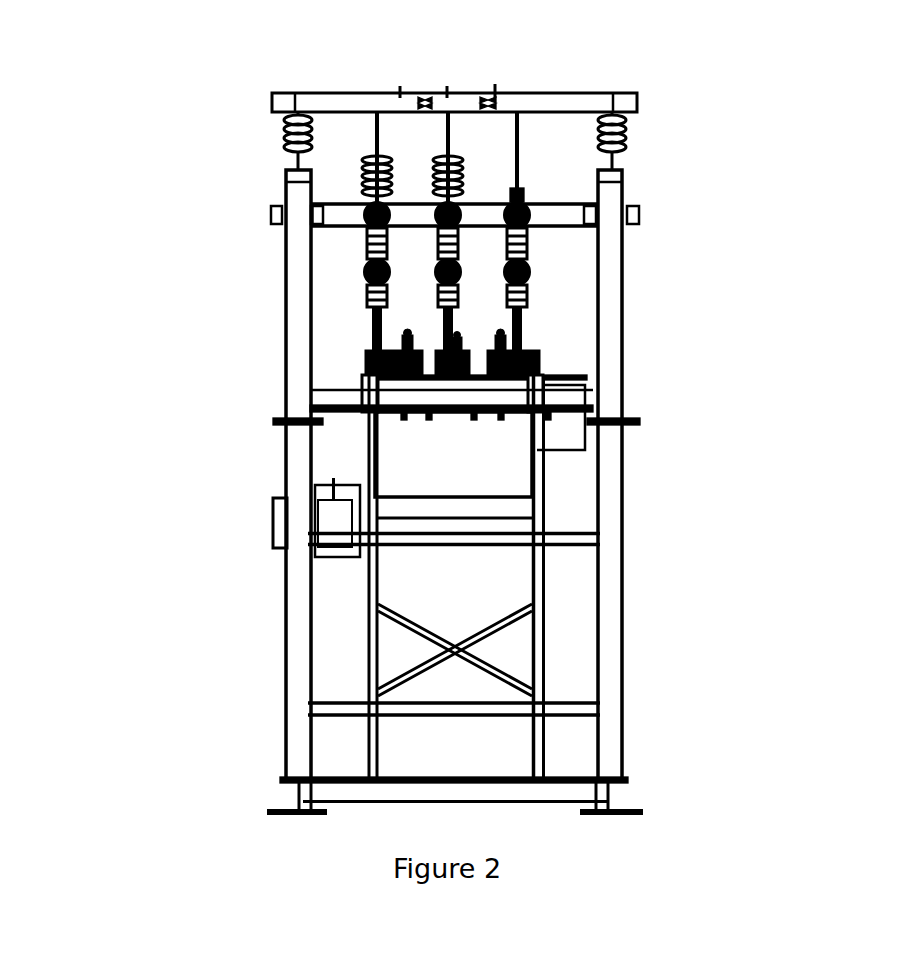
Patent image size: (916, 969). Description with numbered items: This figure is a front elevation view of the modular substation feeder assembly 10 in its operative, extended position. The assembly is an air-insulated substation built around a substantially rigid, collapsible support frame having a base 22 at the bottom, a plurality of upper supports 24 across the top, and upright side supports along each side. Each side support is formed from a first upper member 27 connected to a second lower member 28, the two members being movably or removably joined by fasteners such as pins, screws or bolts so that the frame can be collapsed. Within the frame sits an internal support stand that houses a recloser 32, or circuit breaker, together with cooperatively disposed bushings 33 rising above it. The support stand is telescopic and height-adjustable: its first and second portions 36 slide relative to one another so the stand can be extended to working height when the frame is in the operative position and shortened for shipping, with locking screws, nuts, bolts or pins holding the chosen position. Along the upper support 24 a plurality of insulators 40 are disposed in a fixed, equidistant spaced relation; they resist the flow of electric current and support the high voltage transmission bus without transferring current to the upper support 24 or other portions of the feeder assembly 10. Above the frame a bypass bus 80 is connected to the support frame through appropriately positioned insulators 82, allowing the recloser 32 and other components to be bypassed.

The modular substation feeder assembly 10 is at (775, 90).
The base 22 is at (543, 795).
The upper support 24 is at (555, 215).
The first upper member 27 is at (297, 310).
The second lower member 28 is at (297, 622).
The recloser 32 is at (472, 476).
The bushings 33 is at (370, 356).
The telescopic portion of support stand 36 is at (542, 507).
The insulators 40 is at (362, 160).
The bypass bus 80 is at (552, 95).
The insulators 82 is at (283, 130).